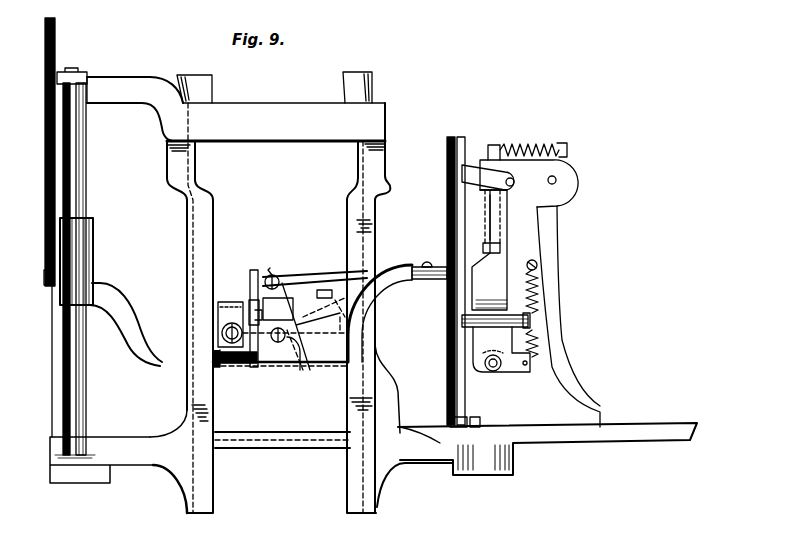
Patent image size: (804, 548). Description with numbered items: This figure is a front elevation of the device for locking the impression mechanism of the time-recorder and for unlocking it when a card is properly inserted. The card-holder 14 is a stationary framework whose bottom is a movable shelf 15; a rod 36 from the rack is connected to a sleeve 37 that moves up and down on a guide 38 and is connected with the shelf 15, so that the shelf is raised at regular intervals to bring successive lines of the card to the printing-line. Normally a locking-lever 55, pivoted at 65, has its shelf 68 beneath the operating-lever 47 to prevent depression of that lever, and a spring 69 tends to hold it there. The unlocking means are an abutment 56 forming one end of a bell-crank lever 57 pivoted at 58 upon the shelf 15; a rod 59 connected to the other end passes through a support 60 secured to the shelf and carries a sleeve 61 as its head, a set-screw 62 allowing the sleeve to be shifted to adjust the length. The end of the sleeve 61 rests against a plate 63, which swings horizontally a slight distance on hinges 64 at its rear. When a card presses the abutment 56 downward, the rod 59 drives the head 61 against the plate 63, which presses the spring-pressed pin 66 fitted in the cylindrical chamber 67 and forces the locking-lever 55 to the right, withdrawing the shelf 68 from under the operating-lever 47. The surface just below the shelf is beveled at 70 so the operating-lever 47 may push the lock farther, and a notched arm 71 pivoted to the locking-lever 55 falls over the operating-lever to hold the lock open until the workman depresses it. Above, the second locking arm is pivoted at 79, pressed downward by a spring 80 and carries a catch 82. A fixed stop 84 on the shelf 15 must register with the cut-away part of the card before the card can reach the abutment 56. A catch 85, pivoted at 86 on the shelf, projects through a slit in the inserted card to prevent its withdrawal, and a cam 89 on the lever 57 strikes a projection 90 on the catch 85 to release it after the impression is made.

The card-holder 14 is at (187, 205).
The shelf 15 is at (318, 375).
The rod 36 is at (56, 50).
The sleeve 37 is at (93, 246).
The guide 38 is at (88, 175).
The operating-lever 47 is at (503, 205).
The locking-lever 55 is at (489, 250).
The abutment 56 is at (325, 290).
The bell-crank lever 57 is at (298, 352).
The pivot 58 is at (278, 343).
The rod 59 is at (276, 277).
The support 60 is at (392, 281).
The sleeve 61 is at (433, 279).
The set-screw 62 is at (427, 261).
The plate 63 is at (462, 175).
The hinges 64 is at (455, 419).
The pivot 65 is at (494, 371).
The spring-pressed pin 66 is at (496, 305).
The cylindrical chamber 67 is at (548, 301).
The shelf 68 is at (497, 252).
The spring 69 is at (539, 338).
The bevel 70 is at (527, 265).
The arm 71 is at (514, 181).
The pivot 79 is at (557, 180).
The spring 80 is at (533, 140).
The catch 82 is at (493, 152).
The fixed stop 84 is at (224, 300).
The catch 85 is at (254, 272).
The pivot 86 is at (258, 365).
The cam 89 is at (286, 303).
The projection 90 is at (253, 304).